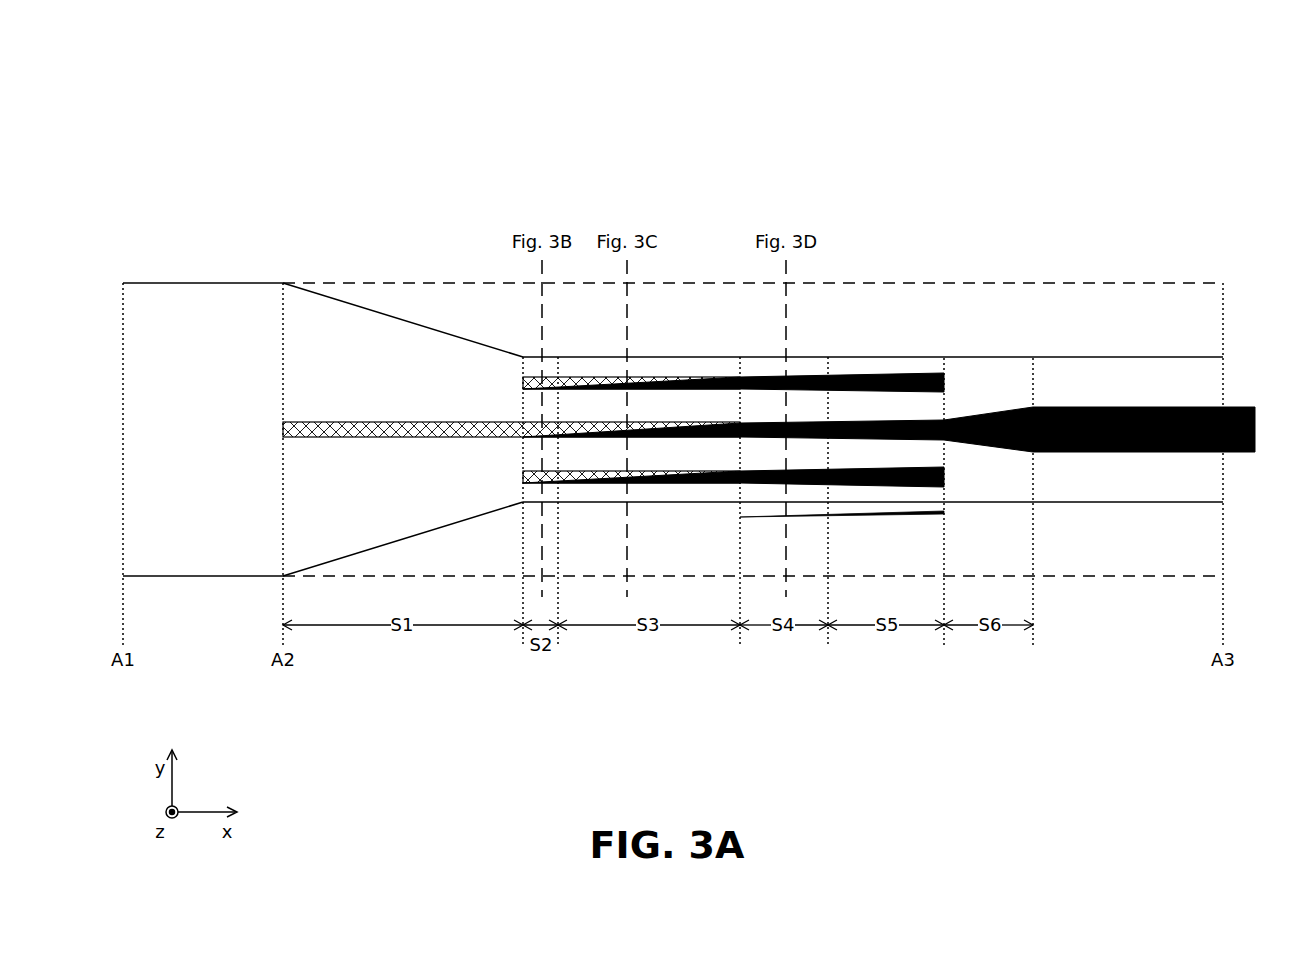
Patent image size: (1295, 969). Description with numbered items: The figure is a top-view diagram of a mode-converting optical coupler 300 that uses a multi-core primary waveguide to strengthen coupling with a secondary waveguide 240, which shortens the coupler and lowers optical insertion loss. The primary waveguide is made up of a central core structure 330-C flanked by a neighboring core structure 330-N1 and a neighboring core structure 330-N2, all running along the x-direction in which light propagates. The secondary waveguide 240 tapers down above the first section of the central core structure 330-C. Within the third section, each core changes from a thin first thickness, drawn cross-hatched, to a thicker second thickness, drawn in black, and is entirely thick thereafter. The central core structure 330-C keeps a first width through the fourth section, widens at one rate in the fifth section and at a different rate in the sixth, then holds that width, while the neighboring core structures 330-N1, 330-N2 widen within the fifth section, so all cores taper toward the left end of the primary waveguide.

The mode-converting optical coupler 300 is at (206, 59).
The secondary waveguide 240 is at (203, 429).
The central core structure 330-C is at (397, 422).
The neighboring core structure 330-N1 is at (673, 377).
The neighboring core structure 330-N2 is at (673, 487).